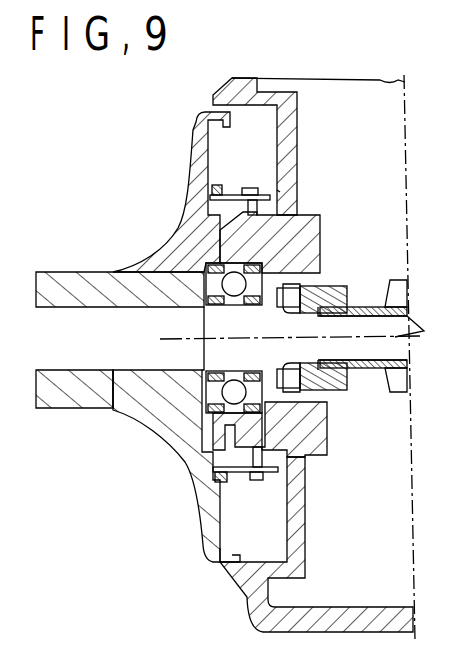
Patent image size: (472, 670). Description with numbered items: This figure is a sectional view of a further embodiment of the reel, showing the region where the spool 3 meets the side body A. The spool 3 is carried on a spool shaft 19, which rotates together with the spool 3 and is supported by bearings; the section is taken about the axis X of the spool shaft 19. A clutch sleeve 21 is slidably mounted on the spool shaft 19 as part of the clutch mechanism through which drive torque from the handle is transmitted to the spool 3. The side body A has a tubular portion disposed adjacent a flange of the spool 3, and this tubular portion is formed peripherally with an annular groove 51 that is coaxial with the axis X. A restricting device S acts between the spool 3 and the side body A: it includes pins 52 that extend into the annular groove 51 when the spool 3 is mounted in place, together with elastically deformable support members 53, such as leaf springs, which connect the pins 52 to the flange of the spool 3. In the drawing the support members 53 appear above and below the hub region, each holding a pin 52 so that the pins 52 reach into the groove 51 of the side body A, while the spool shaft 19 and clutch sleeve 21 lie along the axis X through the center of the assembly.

The spool 3 is at (115, 272).
The spool shaft 19 is at (110, 360).
The clutch sleeve 21 is at (368, 368).
The annular groove 51 is at (256, 226).
The pins 52 is at (280, 192).
The elastically deformable support members 53 is at (237, 196).
The restricting device S is at (352, 92).
The left side body A is at (296, 522).
The axis X is at (280, 339).